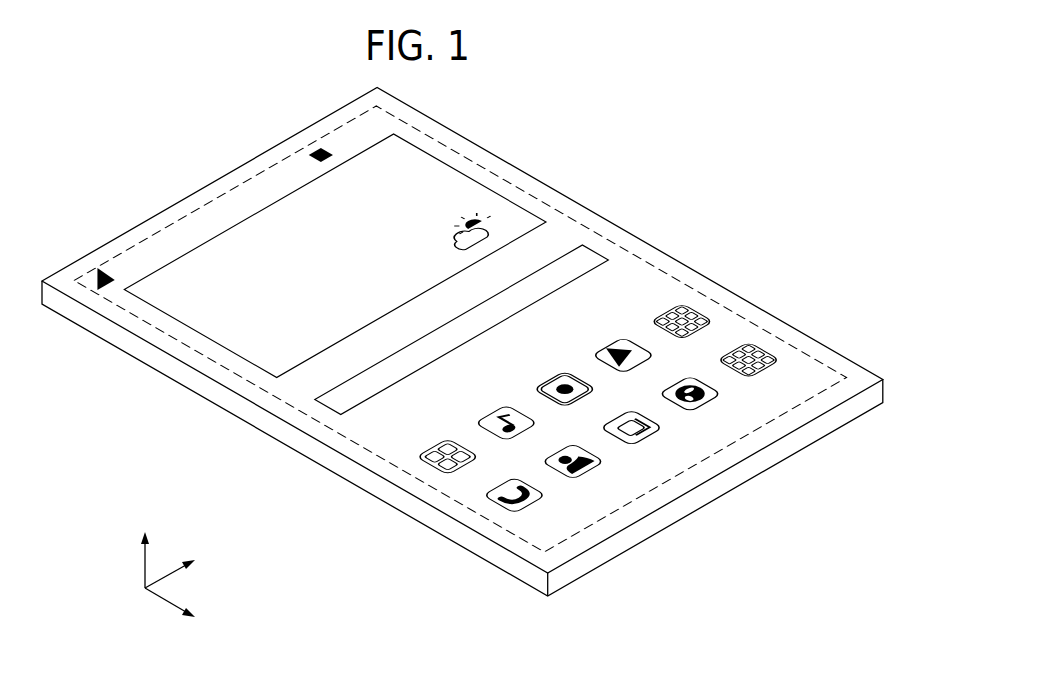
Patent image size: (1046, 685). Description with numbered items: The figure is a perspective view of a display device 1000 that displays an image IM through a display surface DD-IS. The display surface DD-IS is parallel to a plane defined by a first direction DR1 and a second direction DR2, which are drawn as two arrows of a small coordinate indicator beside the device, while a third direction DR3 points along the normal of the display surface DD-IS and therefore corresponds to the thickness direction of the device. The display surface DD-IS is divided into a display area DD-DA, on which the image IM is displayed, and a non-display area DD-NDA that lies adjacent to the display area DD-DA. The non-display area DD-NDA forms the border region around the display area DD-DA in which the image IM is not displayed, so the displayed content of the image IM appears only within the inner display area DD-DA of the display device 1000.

The display device 1000 is at (660, 109).
The image IM is at (470, 178).
The display surface DD-IS is at (207, 81).
The display area DD-DA is at (252, 191).
The non-display area DD-NDA is at (170, 219).
The first direction DR1 is at (188, 613).
The second direction DR2 is at (190, 570).
The third direction DR3 is at (144, 545).